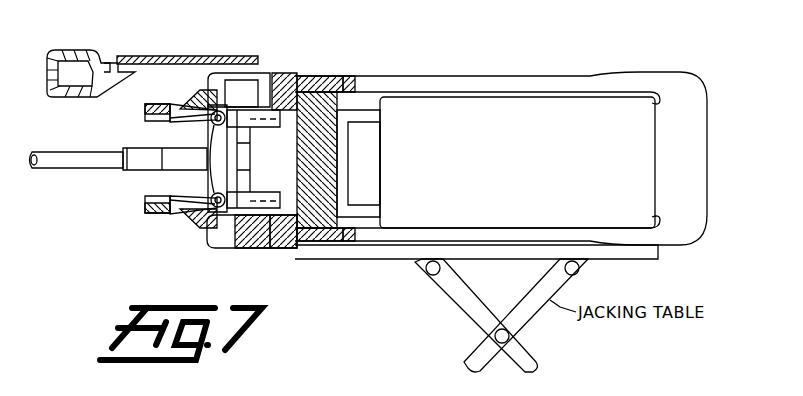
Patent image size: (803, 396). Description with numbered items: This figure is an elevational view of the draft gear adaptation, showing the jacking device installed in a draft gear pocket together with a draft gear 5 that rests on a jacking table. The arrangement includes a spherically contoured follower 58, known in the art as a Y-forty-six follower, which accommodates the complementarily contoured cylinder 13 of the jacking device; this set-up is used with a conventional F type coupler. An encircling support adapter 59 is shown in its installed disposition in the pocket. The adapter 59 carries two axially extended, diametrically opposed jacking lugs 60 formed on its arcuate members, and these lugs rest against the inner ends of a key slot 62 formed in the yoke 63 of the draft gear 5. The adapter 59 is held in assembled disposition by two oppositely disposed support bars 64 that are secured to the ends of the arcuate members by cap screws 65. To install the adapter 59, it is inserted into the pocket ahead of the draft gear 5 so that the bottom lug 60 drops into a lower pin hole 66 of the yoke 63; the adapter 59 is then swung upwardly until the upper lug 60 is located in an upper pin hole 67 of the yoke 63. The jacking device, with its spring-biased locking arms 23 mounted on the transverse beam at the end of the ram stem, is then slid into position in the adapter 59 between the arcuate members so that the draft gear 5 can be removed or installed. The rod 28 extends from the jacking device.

The draft gear 5 is at (520, 108).
The cylinder 13 is at (302, 136).
The locking arm 23 is at (178, 122).
The actuating rod 28 is at (137, 170).
The spherically contoured follower 58 is at (330, 105).
The encircling support adapter 59 is at (228, 107).
The jacking lug 60 is at (268, 86).
The key slot 62 is at (246, 80).
The yoke 63 is at (292, 90).
The support bar 64 is at (203, 215).
The cap screw 65 is at (212, 165).
The lower pin hole 66 is at (249, 237).
The upper pin hole 67 is at (229, 82).